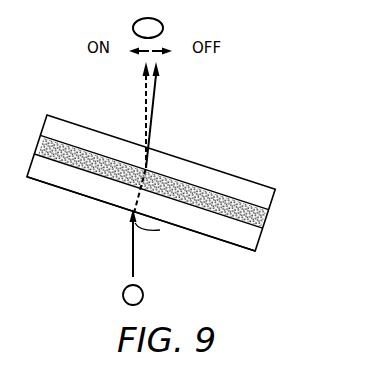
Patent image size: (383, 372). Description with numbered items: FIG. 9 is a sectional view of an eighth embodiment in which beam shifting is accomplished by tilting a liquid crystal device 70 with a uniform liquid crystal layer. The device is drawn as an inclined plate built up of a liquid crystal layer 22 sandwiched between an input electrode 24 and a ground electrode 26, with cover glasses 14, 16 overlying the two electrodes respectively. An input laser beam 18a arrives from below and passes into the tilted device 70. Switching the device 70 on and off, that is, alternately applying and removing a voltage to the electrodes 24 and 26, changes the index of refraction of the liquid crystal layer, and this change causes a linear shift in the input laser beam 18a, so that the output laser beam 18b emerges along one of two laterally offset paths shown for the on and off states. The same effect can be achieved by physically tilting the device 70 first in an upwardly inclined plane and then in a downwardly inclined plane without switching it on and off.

The liquid crystal device 70 is at (260, 150).
The cover glass 14 is at (109, 135).
The cover glass 16 is at (68, 191).
The nematic liquid crystal layer 22 is at (178, 180).
The input electrode 24 is at (262, 221).
The ground electrode 26 is at (223, 220).
The input laser beam 18a is at (133, 243).
The output laser beam 18b is at (163, 22).